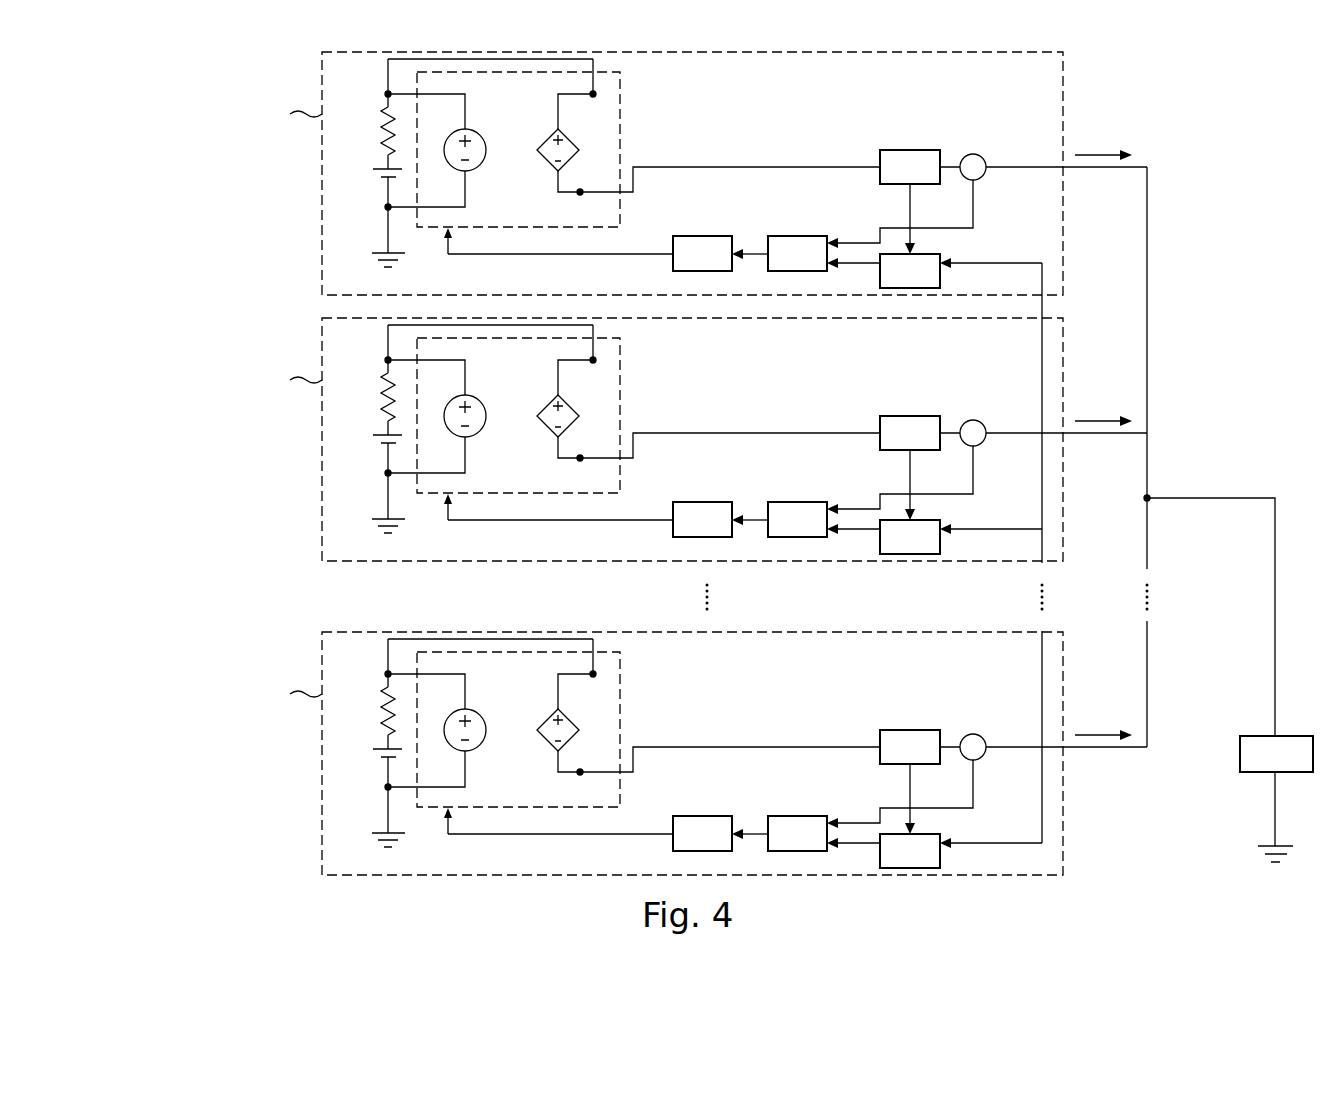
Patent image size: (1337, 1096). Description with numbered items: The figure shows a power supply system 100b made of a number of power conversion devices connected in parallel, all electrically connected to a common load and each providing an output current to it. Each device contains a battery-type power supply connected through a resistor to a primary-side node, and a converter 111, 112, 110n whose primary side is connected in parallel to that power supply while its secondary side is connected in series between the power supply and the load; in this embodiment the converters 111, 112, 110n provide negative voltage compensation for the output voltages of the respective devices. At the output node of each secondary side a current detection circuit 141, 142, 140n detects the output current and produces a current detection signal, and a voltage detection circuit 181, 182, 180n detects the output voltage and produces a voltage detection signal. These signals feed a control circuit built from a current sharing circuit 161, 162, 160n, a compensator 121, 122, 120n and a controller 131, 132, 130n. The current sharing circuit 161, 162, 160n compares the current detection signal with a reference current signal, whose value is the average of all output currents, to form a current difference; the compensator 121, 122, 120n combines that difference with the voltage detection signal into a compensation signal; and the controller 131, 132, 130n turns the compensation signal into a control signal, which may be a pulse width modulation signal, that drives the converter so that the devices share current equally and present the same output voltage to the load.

The power supply system 100b is at (163, 35).
The converter 111 is at (621, 73).
The converter 112 is at (552, 412).
The converter 110n is at (556, 727).
The compensator 121 is at (782, 263).
The compensator 122 is at (797, 519).
The compensator 120n is at (797, 833).
The controller 131 is at (687, 263).
The controller 132 is at (702, 519).
The controller 130n is at (702, 833).
The current detection circuit 141 is at (895, 176).
The current detection circuit 142 is at (910, 433).
The current detection circuit 140n is at (910, 747).
The current sharing circuit 161 is at (895, 280).
The current sharing circuit 162 is at (910, 537).
The current sharing circuit 160n is at (910, 851).
The voltage detection circuit 181 is at (973, 154).
The voltage detection circuit 182 is at (969, 414).
The voltage detection circuit 180n is at (966, 728).